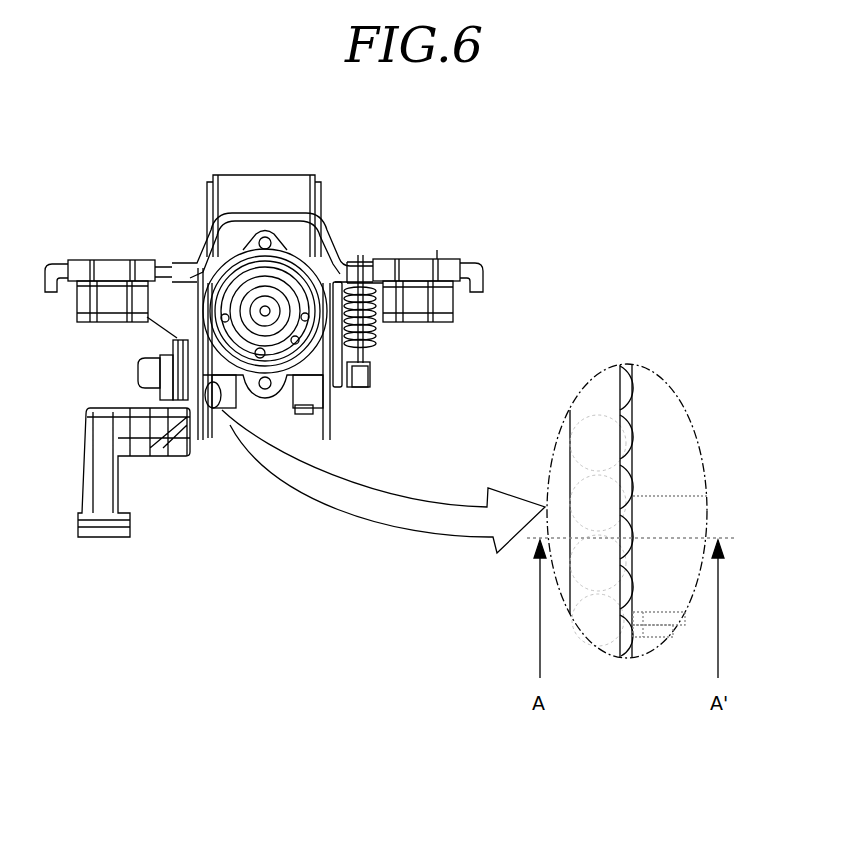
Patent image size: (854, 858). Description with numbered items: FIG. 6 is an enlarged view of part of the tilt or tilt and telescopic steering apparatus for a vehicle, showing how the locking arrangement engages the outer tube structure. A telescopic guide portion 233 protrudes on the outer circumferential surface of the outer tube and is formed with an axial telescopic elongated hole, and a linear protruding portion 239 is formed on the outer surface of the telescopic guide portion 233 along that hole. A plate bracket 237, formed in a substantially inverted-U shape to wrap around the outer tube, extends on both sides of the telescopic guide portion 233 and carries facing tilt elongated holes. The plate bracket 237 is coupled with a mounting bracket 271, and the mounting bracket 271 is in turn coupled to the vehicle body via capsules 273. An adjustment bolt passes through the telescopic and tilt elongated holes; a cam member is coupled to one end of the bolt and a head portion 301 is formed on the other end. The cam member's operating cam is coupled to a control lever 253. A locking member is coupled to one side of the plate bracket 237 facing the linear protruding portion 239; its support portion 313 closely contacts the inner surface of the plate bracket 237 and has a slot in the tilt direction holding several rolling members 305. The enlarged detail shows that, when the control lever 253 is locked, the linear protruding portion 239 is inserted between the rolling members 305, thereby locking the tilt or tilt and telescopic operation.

The telescopic guide portion 233 is at (678, 430).
The plate bracket 237 is at (199, 440).
The linear protruding portion 239 is at (633, 532).
The control lever 253 is at (101, 537).
The mounting bracket 271 is at (335, 262).
The capsules 273 is at (420, 262).
The head portion 301 is at (342, 396).
The rolling members 305 is at (636, 657).
The support portion 313 is at (212, 446).